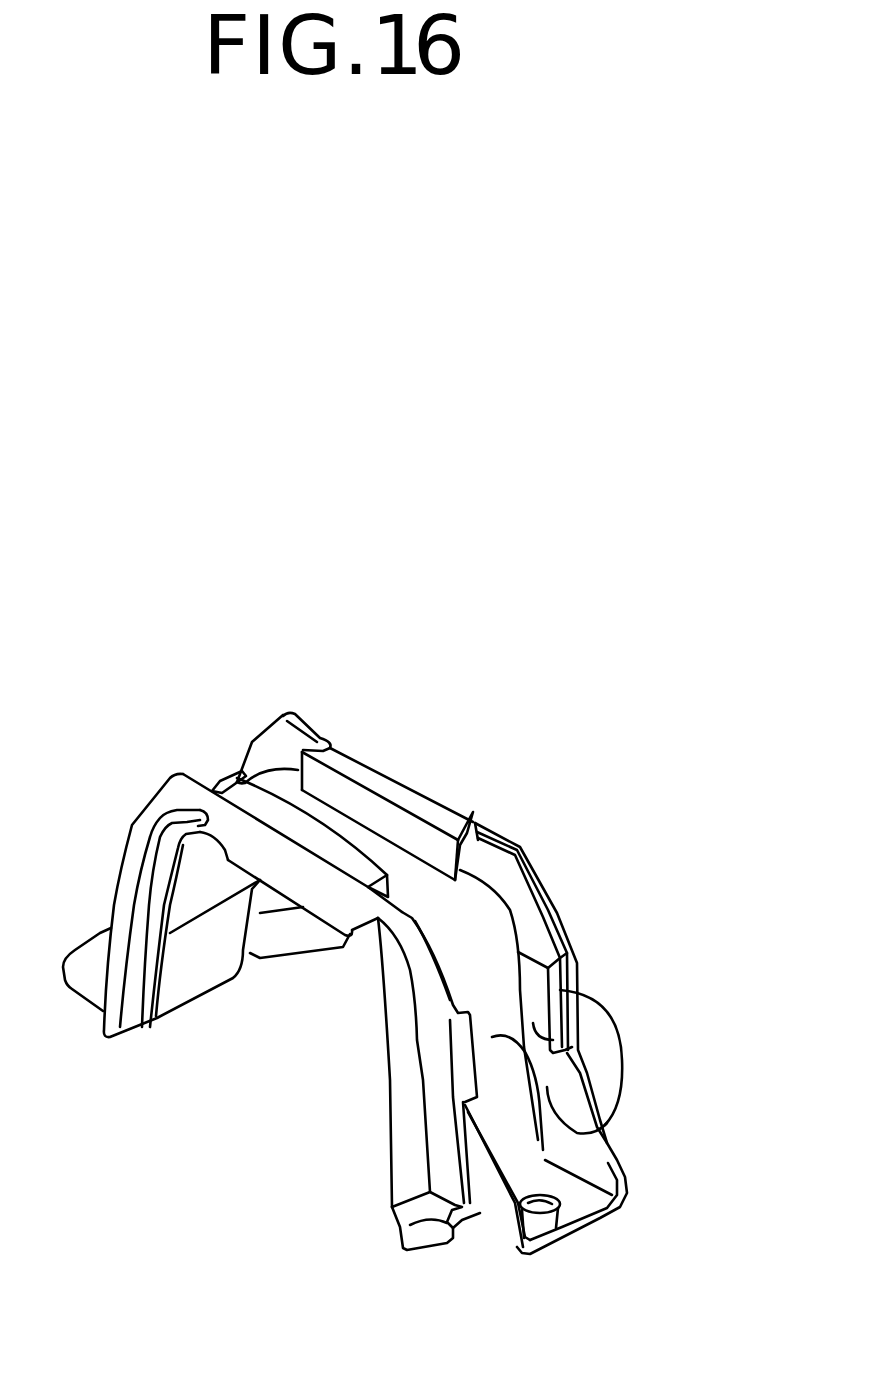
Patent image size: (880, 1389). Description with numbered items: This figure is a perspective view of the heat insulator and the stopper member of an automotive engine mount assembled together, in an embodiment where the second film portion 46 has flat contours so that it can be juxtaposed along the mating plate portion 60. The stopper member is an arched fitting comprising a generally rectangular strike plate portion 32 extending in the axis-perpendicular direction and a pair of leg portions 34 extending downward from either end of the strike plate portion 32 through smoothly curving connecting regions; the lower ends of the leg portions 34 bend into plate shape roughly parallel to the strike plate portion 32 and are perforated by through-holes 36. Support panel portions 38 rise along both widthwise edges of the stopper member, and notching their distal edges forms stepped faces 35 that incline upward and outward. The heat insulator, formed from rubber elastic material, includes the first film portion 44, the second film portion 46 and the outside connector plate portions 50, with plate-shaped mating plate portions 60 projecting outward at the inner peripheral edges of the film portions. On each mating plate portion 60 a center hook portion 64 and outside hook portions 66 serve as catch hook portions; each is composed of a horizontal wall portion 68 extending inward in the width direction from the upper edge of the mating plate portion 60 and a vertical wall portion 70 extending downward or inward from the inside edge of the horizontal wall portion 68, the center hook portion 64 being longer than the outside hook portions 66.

The strike plate portion 32 is at (358, 843).
The leg portions 34 is at (190, 977).
The stepped faces 35 is at (333, 737).
The through-holes 36 is at (538, 1214).
The support panel portions 38 is at (483, 1207).
The first film portion 44 is at (290, 937).
The second film portion 46 is at (412, 1167).
The outside connector plate portions 50 is at (215, 883).
The mating plate portions 60 is at (410, 980).
The center hook portion 64 is at (279, 785).
The outside hook portions 66 is at (690, 983).
The horizontal wall portion 68 is at (340, 843).
The vertical wall portion 70 is at (417, 833).